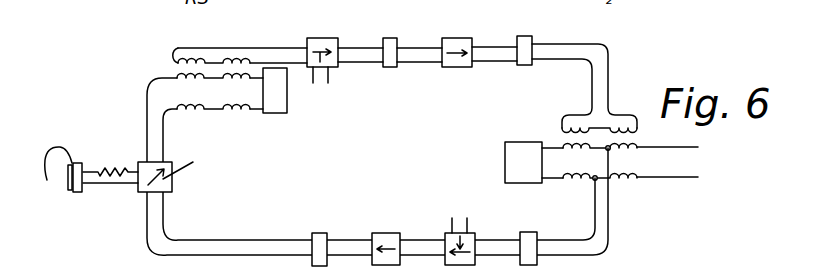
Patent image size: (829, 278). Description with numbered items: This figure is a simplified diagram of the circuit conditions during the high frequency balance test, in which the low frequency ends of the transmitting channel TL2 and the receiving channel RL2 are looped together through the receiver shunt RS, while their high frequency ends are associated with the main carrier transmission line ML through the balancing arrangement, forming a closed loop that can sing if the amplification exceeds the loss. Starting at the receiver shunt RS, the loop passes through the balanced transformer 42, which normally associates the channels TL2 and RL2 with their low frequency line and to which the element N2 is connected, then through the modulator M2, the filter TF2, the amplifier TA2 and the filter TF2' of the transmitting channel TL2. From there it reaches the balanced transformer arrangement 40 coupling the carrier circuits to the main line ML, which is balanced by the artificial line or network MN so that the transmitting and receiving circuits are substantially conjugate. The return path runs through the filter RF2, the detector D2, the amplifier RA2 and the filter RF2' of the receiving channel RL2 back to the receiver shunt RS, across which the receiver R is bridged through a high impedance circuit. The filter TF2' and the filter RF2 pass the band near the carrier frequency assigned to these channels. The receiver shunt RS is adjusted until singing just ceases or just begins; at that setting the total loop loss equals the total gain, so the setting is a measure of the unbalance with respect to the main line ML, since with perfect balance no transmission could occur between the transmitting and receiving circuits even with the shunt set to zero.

The transformer 42 is at (209, 70).
The transmitting channel TL2 is at (279, 54).
The modulator M2 is at (318, 47).
The filter TF2 is at (408, 40).
The amplifier TA2 is at (453, 47).
The filter TF2' is at (546, 36).
The line transformer 40 is at (562, 128).
The artificial line or network MN is at (515, 168).
The main carrier transmission line ML is at (667, 162).
The receiving channel RL2 is at (602, 208).
The balancing network N2 is at (275, 95).
The filter RF2' is at (339, 233).
The amplifier RA2 is at (387, 245).
The detector D2 is at (468, 242).
The filter RF2 is at (549, 234).
The receiver shunt RS is at (170, 185).
The receiver R is at (78, 196).